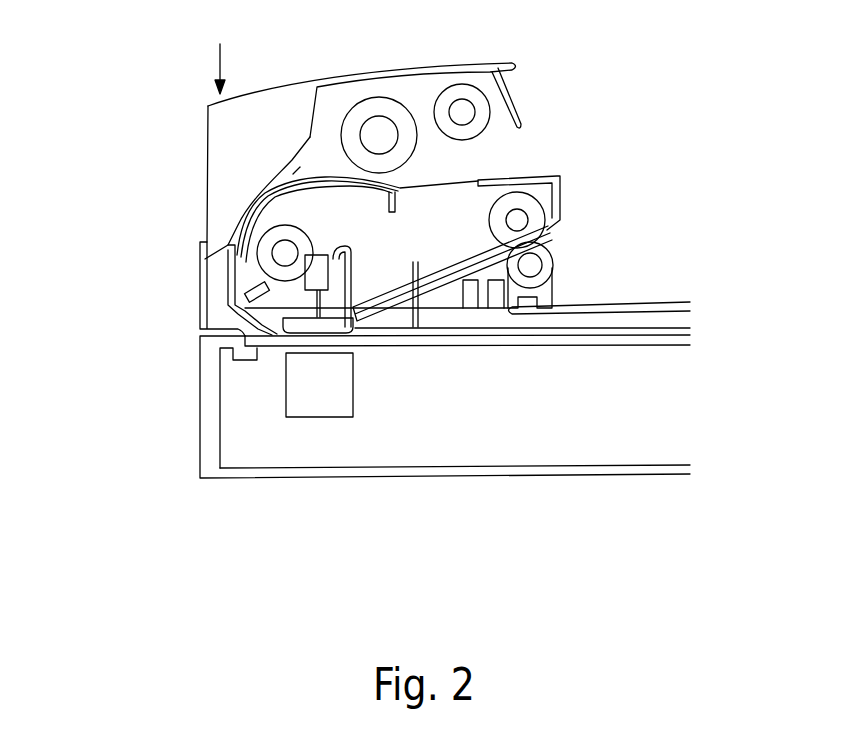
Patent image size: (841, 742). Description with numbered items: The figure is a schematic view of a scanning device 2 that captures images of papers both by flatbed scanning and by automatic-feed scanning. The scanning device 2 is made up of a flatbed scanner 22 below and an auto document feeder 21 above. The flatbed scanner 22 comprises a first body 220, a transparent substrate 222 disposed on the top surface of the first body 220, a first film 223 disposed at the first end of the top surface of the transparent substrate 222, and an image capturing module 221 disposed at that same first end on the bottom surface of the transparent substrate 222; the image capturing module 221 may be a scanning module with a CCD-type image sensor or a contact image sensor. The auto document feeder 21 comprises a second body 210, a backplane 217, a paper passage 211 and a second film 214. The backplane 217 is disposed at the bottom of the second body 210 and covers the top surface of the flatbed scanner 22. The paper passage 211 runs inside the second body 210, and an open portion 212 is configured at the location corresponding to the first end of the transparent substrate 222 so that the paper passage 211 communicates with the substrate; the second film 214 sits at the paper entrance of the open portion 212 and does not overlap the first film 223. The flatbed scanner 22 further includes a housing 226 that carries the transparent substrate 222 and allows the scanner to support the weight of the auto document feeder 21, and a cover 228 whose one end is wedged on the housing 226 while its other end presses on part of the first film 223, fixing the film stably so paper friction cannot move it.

The scanning device 2 is at (780, 54).
The auto document feeder 21 is at (165, 161).
The flatbed scanner 22 is at (166, 420).
The second body 210 is at (220, 267).
The paper passage 211 is at (300, 167).
The open portion 212 is at (323, 337).
The second film 214 is at (370, 340).
The backplane 217 is at (688, 328).
The first body 220 is at (232, 390).
The image capturing module 221 is at (319, 385).
The transparent substrate 222 is at (643, 347).
The first film 223 is at (228, 307).
The housing 226 is at (220, 460).
The cover 228 is at (200, 336).